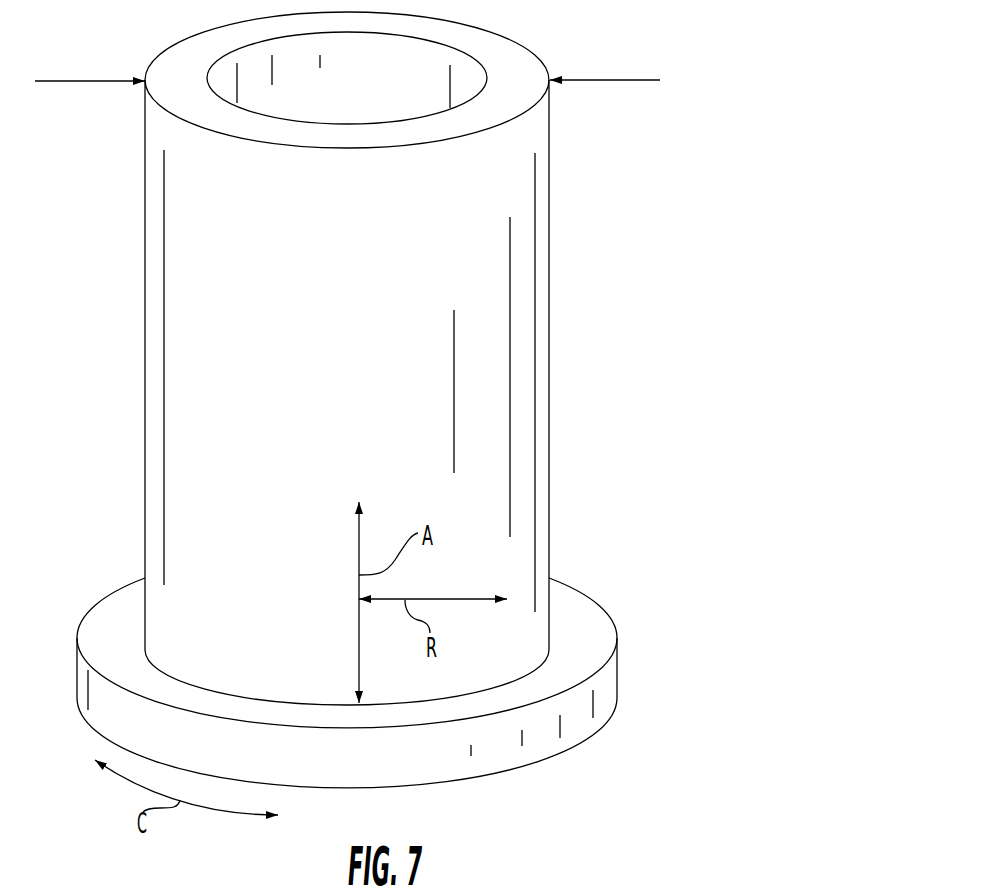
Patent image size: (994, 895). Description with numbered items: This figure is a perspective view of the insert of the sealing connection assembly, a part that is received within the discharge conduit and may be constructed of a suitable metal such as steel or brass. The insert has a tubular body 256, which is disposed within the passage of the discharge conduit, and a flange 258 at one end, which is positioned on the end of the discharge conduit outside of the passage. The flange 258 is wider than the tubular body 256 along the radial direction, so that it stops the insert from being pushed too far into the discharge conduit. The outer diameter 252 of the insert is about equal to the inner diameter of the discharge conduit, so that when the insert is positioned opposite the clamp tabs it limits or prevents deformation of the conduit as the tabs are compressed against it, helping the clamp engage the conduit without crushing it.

The outer diameter 252 is at (568, 80).
The tubular body 256 is at (550, 317).
The flange 258 is at (598, 693).